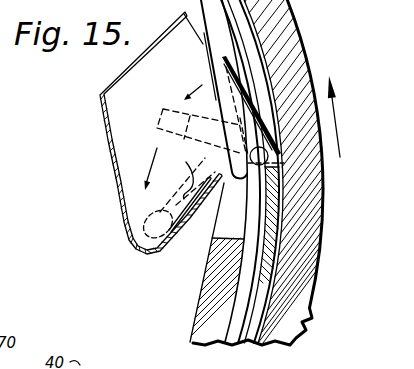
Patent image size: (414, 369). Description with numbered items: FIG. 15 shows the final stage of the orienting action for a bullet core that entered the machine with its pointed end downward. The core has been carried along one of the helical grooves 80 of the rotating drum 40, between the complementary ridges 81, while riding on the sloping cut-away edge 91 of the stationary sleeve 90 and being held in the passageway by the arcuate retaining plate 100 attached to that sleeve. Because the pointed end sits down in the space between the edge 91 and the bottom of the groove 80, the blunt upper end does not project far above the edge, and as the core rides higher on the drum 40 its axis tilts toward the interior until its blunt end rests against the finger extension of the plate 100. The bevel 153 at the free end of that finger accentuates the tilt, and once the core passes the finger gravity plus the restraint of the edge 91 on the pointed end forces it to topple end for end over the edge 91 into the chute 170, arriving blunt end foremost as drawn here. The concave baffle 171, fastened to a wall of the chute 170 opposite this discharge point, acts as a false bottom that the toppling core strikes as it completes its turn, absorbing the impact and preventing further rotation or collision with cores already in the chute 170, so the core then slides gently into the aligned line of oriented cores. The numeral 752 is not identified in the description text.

The drum 40 is at (303, 334).
The grooves 80 is at (269, 256).
The ridges 81 is at (252, 292).
The sleeve 90 is at (262, 217).
The cut away edge 91 is at (270, 150).
The arcuate plate 100 is at (212, 292).
The bevel 153 is at (197, 60).
The tab 752 is at (197, 48).
The chute 170 is at (112, 161).
The concave baffle 171 is at (189, 165).